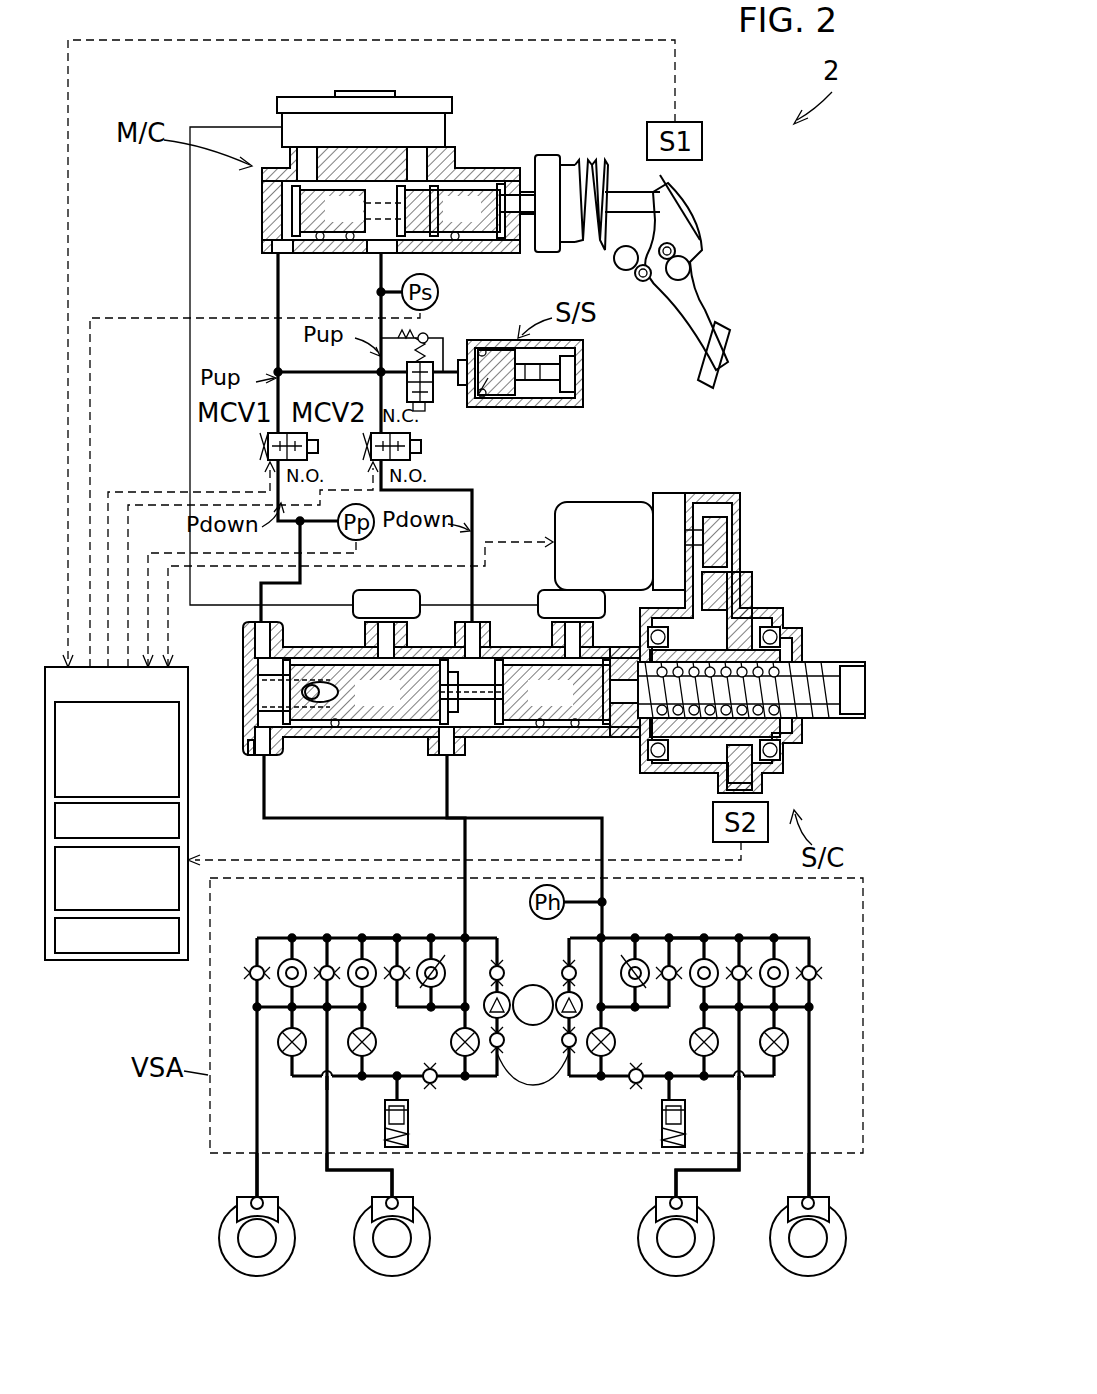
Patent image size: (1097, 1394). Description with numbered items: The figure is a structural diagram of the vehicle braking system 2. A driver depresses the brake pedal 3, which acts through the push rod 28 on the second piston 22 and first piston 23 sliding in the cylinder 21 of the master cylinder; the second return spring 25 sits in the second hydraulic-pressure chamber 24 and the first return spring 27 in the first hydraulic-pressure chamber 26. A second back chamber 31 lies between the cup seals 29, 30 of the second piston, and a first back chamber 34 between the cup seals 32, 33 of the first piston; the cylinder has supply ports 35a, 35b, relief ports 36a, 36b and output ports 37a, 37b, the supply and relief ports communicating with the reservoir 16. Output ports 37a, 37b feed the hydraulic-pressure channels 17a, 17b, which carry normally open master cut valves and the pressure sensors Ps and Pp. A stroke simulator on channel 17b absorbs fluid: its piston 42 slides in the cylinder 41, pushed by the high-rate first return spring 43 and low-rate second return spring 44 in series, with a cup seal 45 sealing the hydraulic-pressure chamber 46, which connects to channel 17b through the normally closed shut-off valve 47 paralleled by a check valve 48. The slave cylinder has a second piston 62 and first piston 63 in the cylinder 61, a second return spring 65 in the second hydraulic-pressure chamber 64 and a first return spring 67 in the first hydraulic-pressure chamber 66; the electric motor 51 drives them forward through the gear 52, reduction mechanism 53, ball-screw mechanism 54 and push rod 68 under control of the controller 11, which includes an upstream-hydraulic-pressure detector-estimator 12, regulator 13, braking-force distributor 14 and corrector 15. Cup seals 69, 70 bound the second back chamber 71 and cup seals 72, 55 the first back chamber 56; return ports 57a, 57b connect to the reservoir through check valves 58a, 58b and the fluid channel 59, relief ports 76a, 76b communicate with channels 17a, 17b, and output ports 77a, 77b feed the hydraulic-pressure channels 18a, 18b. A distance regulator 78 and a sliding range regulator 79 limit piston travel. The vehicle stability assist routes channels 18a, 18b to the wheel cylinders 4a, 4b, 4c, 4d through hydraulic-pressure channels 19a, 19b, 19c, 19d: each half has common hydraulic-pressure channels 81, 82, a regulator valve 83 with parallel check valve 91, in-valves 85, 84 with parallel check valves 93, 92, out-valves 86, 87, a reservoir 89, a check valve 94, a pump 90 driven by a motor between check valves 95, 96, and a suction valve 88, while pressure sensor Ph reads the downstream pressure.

The vehicle braking system 2 is at (831, 71).
The brake pedal 3 is at (728, 358).
The wheel cylinder 4a is at (787, 1205).
The wheel cylinder 4b is at (655, 1205).
The wheel cylinder 4c is at (419, 1200).
The wheel cylinder 4d is at (284, 1200).
The controller 11 is at (135, 841).
The upstream-hydraulic-pressure detector-estimator 12 is at (180, 728).
The regulator 13 is at (180, 826).
The braking-force distributor 14 is at (180, 854).
The corrector 15 is at (162, 960).
The reservoir 16 is at (276, 106).
The hydraulic-pressure channel 17a is at (378, 392).
The hydraulic-pressure channel 17b is at (276, 346).
The hydraulic-pressure channel 18a is at (603, 828).
The hydraulic-pressure channel 18b is at (358, 819).
The hydraulic-pressure channel 19a is at (807, 1180).
The hydraulic-pressure channel 19b is at (674, 1180).
The hydraulic-pressure channel 19c is at (394, 1178).
The hydraulic-pressure channel 19d is at (254, 1178).
The cylinder 21 is at (465, 168).
The second piston 22 is at (452, 211).
The first piston 23 is at (332, 211).
The second hydraulic-pressure chamber 24 is at (398, 186).
The second return spring 25 is at (456, 243).
The first hydraulic-pressure chamber 26 is at (282, 160).
The first return spring 27 is at (270, 215).
The push rod 28 is at (556, 164).
The cup seal 29 is at (436, 186).
The cup seal 30 is at (514, 182).
The second back chamber 31 is at (503, 184).
The cup seal 32 is at (318, 243).
The cup seal 33 is at (374, 296).
The first back chamber 34 is at (347, 243).
The supply port 35a is at (404, 186).
The supply port 35b is at (296, 186).
The relief port 36a is at (417, 150).
The relief port 36b is at (307, 150).
The output port 37a is at (390, 250).
The output port 37b is at (272, 248).
The cylinder 41 is at (575, 398).
The piston 42 is at (500, 398).
The first return spring 43 is at (584, 378).
The second return spring 44 is at (540, 398).
The cup seal 45 is at (496, 400).
The hydraulic-pressure chamber 46 is at (480, 398).
The shut-off valve 47 is at (432, 404).
The check valve 48 is at (432, 338).
The motor 51 is at (602, 500).
The gear 52 is at (727, 522).
The reduction mechanism 53 is at (742, 570).
The ball-screw mechanism 54 is at (782, 615).
The cup seal 55 is at (437, 745).
The first back chamber 56 is at (395, 740).
The return port 57a is at (580, 637).
The return port 57b is at (378, 636).
The check valve 58a is at (545, 600).
The check valve 58b is at (372, 600).
The fluid channel 59 is at (188, 236).
The cylinder 61 is at (630, 740).
The second piston 62 is at (556, 692).
The first piston 63 is at (365, 692).
The second hydraulic-pressure chamber 64 is at (445, 662).
The second return spring 65 is at (458, 737).
The first hydraulic-pressure chamber 66 is at (268, 672).
The first return spring 67 is at (274, 760).
The push rod 68 is at (832, 664).
The cup seal 69 is at (500, 726).
The cup seal 70 is at (607, 740).
The second back chamber 71 is at (576, 729).
The cup seal 72 is at (288, 745).
The relief port 76a is at (483, 640).
The relief port 76b is at (255, 640).
The output port 77a is at (450, 757).
The output port 77b is at (266, 758).
The distance regulator 78 is at (541, 728).
The sliding range regulator 79 is at (338, 730).
The hydraulic-pressure channel 81 is at (350, 936).
The hydraulic-pressure channel 82 is at (344, 1082).
The regulator valve 83 is at (433, 957).
The in-valve 84 is at (363, 957).
The in-valve 85 is at (285, 957).
The out-valve 86 is at (289, 1058).
The out-valve 87 is at (376, 1050).
The suction valve 88 is at (452, 1040).
The reservoir 89 is at (409, 1136).
The pump 90 is at (552, 1022).
The check valve 91 is at (398, 962).
The check valve 92 is at (325, 962).
The check valve 93 is at (252, 965).
The check valve 94 is at (432, 1085).
The check valve 95 is at (532, 1090).
The check valve 96 is at (552, 975).